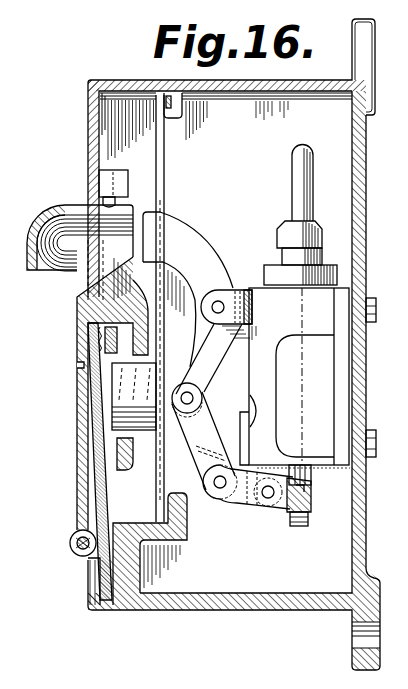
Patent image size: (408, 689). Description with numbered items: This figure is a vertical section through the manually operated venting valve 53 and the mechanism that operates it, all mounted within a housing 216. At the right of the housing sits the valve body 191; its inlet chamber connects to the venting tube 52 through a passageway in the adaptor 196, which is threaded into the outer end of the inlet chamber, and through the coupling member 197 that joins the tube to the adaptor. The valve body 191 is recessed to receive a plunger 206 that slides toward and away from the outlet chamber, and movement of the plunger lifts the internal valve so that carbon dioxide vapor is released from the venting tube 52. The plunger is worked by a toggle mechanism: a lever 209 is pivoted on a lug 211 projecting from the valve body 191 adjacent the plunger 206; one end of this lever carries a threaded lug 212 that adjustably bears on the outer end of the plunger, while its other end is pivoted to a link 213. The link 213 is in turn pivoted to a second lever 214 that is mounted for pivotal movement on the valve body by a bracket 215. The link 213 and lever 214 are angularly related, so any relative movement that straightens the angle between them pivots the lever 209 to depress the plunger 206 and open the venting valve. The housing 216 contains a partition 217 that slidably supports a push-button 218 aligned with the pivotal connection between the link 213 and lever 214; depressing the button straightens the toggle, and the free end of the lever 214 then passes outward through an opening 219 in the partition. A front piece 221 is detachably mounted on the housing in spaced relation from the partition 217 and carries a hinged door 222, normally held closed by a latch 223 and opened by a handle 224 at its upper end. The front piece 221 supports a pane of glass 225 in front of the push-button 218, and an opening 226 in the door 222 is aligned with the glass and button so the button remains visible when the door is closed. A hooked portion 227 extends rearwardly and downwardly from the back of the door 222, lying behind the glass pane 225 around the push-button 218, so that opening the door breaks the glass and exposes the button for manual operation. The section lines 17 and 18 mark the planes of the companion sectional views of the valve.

The front piece 221 is at (89, 136).
The hinged door 222 is at (83, 477).
The housing 216 is at (227, 604).
The latch 223 is at (108, 187).
The handle 224 is at (54, 215).
The opening 226 is at (79, 368).
The pane of glass 225 is at (103, 413).
The push-button 218 is at (118, 383).
The hooked portion 227 is at (118, 452).
The partition 217 is at (157, 178).
The opening 219 is at (164, 209).
The lever 214 is at (206, 241).
The bracket 215 is at (222, 291).
The link 213 is at (208, 417).
The lever 209 is at (237, 502).
The lug 211 is at (265, 508).
The lug 212 is at (306, 496).
The plunger 206 is at (313, 480).
The manually operated venting valve 53 is at (341, 359).
The valve body 191 is at (324, 391).
The adaptor 196 is at (338, 272).
The coupling member 197 is at (277, 232).
The venting tube 52 is at (311, 169).
The section line 17- 17 is at (302, 177).
The section line 18- 18 is at (377, 393).